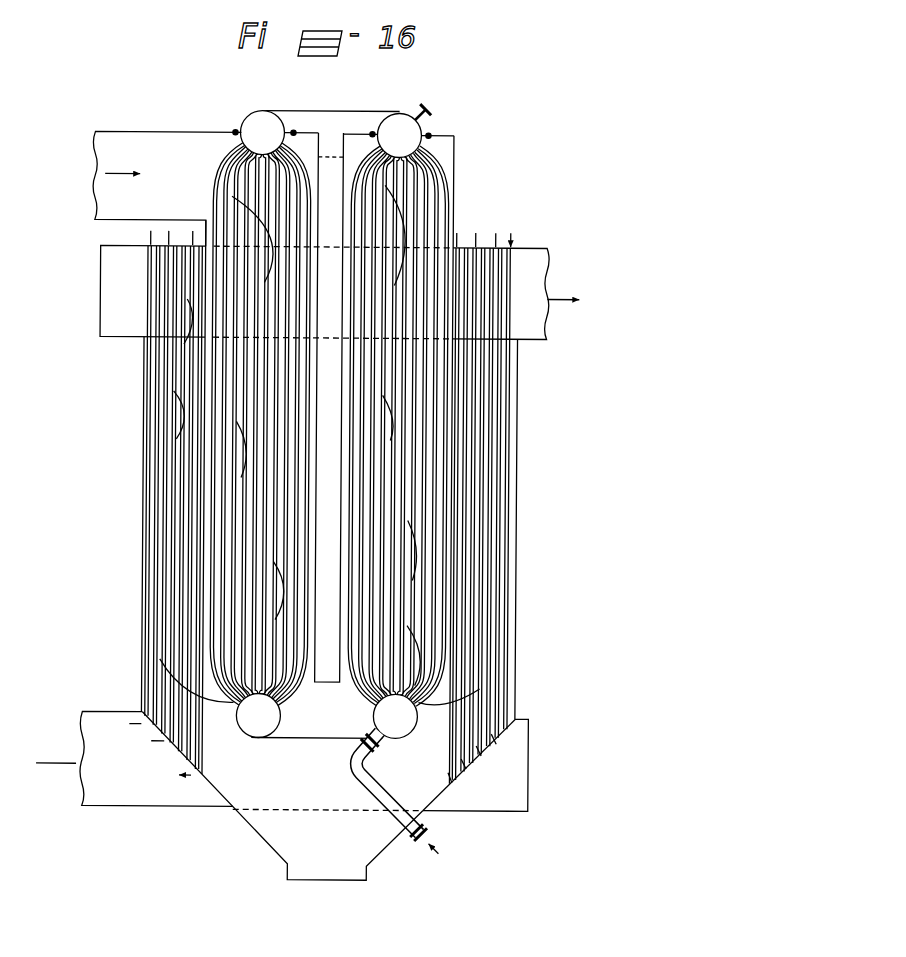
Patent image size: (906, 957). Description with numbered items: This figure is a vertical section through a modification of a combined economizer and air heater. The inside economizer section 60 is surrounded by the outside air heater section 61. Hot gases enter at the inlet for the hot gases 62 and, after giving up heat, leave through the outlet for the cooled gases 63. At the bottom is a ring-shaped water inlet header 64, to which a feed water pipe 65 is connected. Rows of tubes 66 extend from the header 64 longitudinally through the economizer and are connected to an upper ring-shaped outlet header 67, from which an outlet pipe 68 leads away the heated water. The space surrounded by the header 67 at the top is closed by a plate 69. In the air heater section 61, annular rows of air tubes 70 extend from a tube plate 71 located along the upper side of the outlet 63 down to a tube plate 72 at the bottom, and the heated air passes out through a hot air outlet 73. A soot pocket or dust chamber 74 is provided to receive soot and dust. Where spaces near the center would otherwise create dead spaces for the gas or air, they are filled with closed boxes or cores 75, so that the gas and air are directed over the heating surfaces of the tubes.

The inside economizer section 60 is at (455, 226).
The outside air heater section 61 is at (400, 462).
The inlet for the hot gases 62 is at (167, 188).
The outlet for the cooled gases 63 is at (534, 339).
The ring-shaped water inlet header 64 is at (266, 739).
The feed water pipe 65 is at (372, 784).
The rows of tubes 66 is at (433, 468).
The upper ring-shaped outlet header 67 is at (401, 113).
The outlet pipe 68 is at (437, 116).
The plate 69 is at (320, 134).
The annular rows of air tubes 70 is at (176, 583).
The tube plate 71 is at (498, 248).
The tube plate 72 is at (440, 790).
The hot air outlet 73 is at (133, 808).
The soot pocket or dust chamber 74 is at (282, 796).
The closed boxes or cores 75 is at (326, 684).